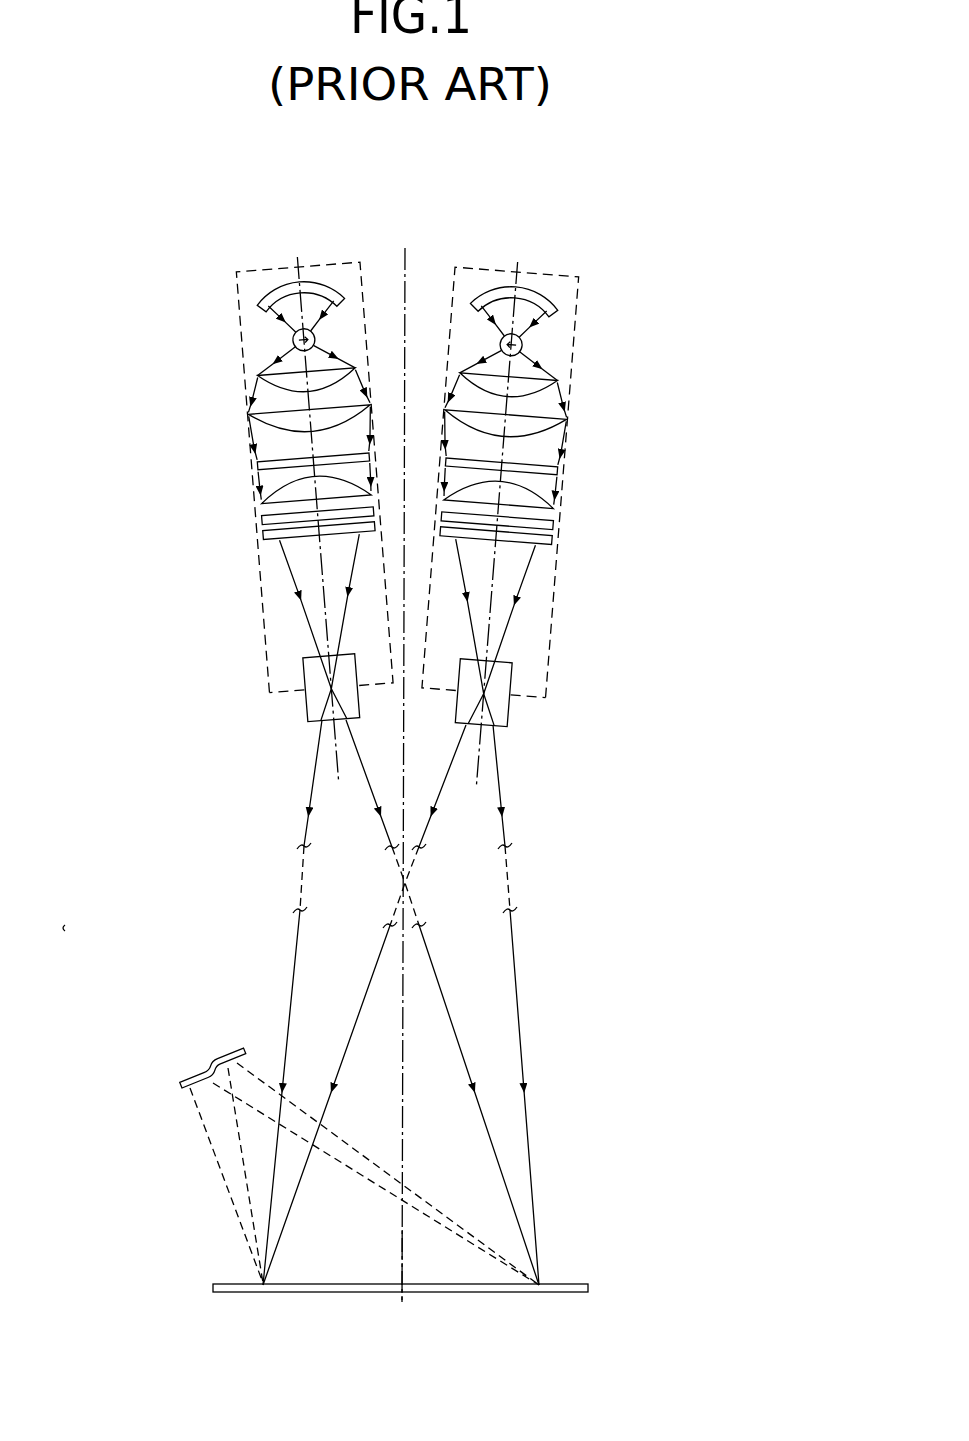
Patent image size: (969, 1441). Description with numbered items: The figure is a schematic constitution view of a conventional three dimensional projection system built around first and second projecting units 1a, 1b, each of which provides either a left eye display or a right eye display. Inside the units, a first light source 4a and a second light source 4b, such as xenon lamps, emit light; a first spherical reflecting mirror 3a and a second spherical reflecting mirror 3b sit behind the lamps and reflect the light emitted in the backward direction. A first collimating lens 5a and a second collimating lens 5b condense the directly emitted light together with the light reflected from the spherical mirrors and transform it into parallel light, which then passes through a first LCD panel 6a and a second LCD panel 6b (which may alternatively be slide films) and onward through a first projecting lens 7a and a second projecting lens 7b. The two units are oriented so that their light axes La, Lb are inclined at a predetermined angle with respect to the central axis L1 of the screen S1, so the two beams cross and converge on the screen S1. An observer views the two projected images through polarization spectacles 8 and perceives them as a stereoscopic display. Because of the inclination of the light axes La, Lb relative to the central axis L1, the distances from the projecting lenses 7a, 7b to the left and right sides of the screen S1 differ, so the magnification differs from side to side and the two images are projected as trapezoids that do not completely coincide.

The first projecting unit 1a is at (257, 627).
The second projecting unit 1b is at (556, 633).
The first spherical reflecting mirror 3a is at (258, 304).
The second spherical reflecting mirror 3b is at (559, 309).
The first light source 4a is at (292, 341).
The second light source 4b is at (523, 347).
The first collimating lens 5a is at (235, 507).
The second collimating lens 5b is at (590, 380).
The first LCD panel 6a is at (263, 540).
The second LCD panel 6b is at (548, 546).
The first projecting lens 7a is at (303, 714).
The second projecting lens 7b is at (512, 720).
The light axis of the first projecting unit La is at (338, 778).
The light axis of the second projecting unit Lb is at (474, 778).
The polarization spectacles 8 is at (205, 1073).
The screen S1 is at (228, 1284).
The central axis of the screen L1 is at (400, 1268).